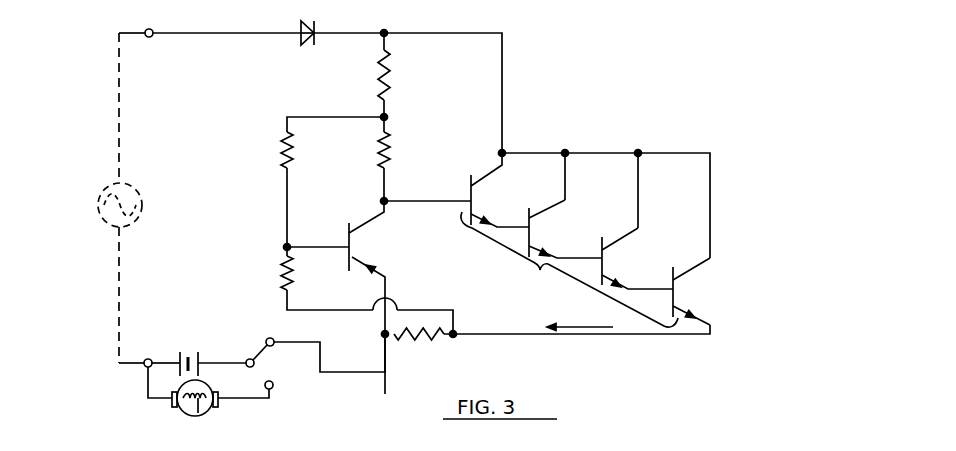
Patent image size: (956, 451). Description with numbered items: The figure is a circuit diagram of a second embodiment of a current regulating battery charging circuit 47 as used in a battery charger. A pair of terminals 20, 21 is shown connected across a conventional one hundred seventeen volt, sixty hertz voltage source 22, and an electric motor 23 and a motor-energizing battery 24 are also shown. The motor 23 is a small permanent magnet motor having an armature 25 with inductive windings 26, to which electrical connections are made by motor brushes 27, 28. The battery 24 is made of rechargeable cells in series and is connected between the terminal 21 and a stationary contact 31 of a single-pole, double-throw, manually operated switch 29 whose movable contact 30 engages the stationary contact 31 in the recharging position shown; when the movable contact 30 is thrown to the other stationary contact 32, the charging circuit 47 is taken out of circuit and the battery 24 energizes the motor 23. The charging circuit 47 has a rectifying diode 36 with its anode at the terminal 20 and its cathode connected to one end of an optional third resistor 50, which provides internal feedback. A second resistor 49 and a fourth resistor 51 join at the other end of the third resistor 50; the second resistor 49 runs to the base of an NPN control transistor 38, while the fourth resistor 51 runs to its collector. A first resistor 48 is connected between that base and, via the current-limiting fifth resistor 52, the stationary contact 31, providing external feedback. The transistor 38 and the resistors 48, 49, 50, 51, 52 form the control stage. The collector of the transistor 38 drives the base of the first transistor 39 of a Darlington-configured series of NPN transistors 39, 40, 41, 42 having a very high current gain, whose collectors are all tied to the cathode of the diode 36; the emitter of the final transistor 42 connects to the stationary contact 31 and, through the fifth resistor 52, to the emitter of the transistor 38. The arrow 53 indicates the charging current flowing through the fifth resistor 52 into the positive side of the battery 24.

The terminal 20 is at (151, 38).
The terminal 21 is at (148, 358).
The voltage source 22 is at (142, 205).
The electric motor 23 is at (139, 405).
The battery 24 is at (185, 348).
The armature 25 is at (187, 414).
The inductive windings 26 is at (204, 415).
The motor brush 27 is at (172, 393).
The motor brush 28 is at (222, 377).
The manually operated switch 29 is at (301, 379).
The movable contact 30 is at (248, 358).
The stationary contact 31 is at (270, 336).
The stationary contact 32 is at (274, 384).
The rectifying diode 36 is at (320, 25).
The transistor 38 is at (354, 245).
The transistor 39 is at (500, 190).
The transistor 40 is at (565, 229).
The transistor 41 is at (637, 258).
The transistor 42 is at (700, 291).
The battery charging circuit 47 is at (595, 196).
The first resistor 48 is at (291, 285).
The second resistor 49 is at (293, 147).
The third resistor 50 is at (392, 74).
The fourth resistor 51 is at (392, 157).
The fifth resistor 52 is at (432, 322).
The arrow 53 is at (590, 323).